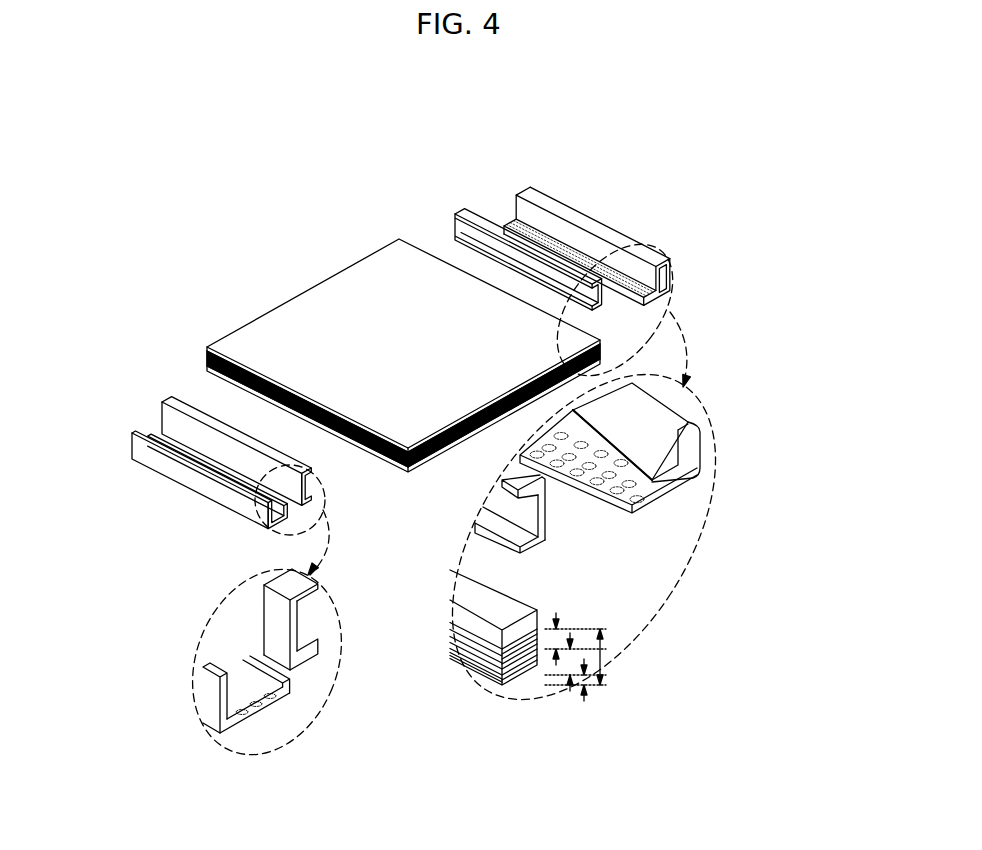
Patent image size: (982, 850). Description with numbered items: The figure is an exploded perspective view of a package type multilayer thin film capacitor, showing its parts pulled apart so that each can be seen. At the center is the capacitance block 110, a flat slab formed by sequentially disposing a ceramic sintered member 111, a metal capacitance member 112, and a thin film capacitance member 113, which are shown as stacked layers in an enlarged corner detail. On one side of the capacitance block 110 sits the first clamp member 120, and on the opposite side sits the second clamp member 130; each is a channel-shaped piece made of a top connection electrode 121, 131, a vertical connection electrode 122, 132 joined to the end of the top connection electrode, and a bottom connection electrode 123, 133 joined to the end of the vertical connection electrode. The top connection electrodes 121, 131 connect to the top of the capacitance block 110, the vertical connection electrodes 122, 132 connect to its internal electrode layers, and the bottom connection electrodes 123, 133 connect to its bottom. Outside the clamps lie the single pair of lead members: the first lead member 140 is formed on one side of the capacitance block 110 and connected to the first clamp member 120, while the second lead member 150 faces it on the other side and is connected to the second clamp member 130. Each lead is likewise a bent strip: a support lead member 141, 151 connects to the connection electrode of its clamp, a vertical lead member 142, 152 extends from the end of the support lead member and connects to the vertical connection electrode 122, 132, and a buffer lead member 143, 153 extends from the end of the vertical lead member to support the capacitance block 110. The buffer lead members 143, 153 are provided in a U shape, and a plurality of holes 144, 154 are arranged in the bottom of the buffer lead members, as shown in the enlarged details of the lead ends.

The capacitance block 110 is at (297, 290).
The ceramic sintered member 111 is at (570, 691).
The metal capacitance member 112 is at (560, 636).
The thin film capacitance member 113 is at (584, 701).
The first clamp member 120 is at (450, 213).
The top connection electrode 121 is at (544, 478).
The vertical connection electrode 122 is at (520, 508).
The bottom connection electrode 123 is at (520, 530).
The second clamp member 130 is at (170, 395).
The top connection electrode 131 is at (303, 580).
The vertical connection electrode 132 is at (303, 616).
The bottom connection electrode 133 is at (305, 648).
The first lead member 140 is at (513, 192).
The support lead member 141 is at (683, 448).
The vertical lead member 142 is at (650, 410).
The buffer lead member 143 is at (660, 470).
The holes 144 is at (640, 496).
The second lead member 150 is at (132, 428).
The support lead member 151 is at (257, 678).
The vertical lead member 152 is at (287, 700).
The buffer lead member 153 is at (250, 712).
The holes 154 is at (240, 725).